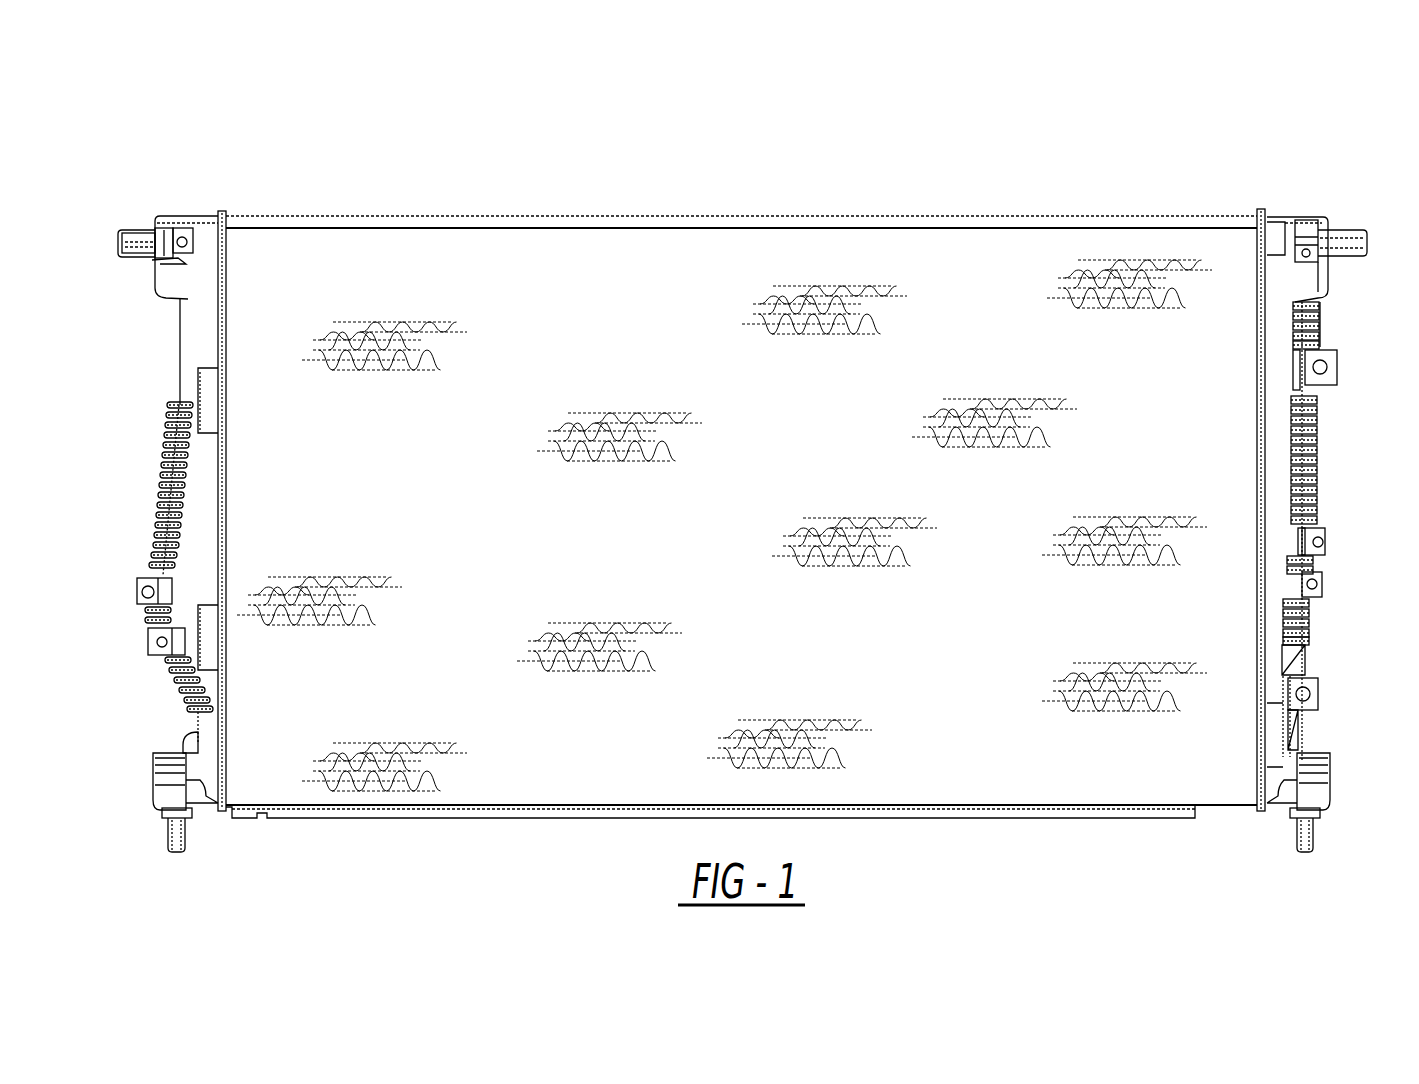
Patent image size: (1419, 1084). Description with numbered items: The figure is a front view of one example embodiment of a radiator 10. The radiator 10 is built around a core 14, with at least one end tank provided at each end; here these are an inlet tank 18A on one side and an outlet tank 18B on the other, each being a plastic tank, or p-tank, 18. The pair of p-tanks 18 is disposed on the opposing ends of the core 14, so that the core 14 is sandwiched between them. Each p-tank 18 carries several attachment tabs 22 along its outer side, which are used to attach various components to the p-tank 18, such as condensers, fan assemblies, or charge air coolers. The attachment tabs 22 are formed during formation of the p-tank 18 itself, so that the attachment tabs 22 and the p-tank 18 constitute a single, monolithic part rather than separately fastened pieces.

The radiator 10 is at (1012, 135).
The core 14 is at (556, 246).
The p-tank 18 is at (208, 228).
The inlet tank 18A is at (158, 380).
The outlet tank 18B is at (1336, 413).
The attachment tab 22 is at (172, 227).